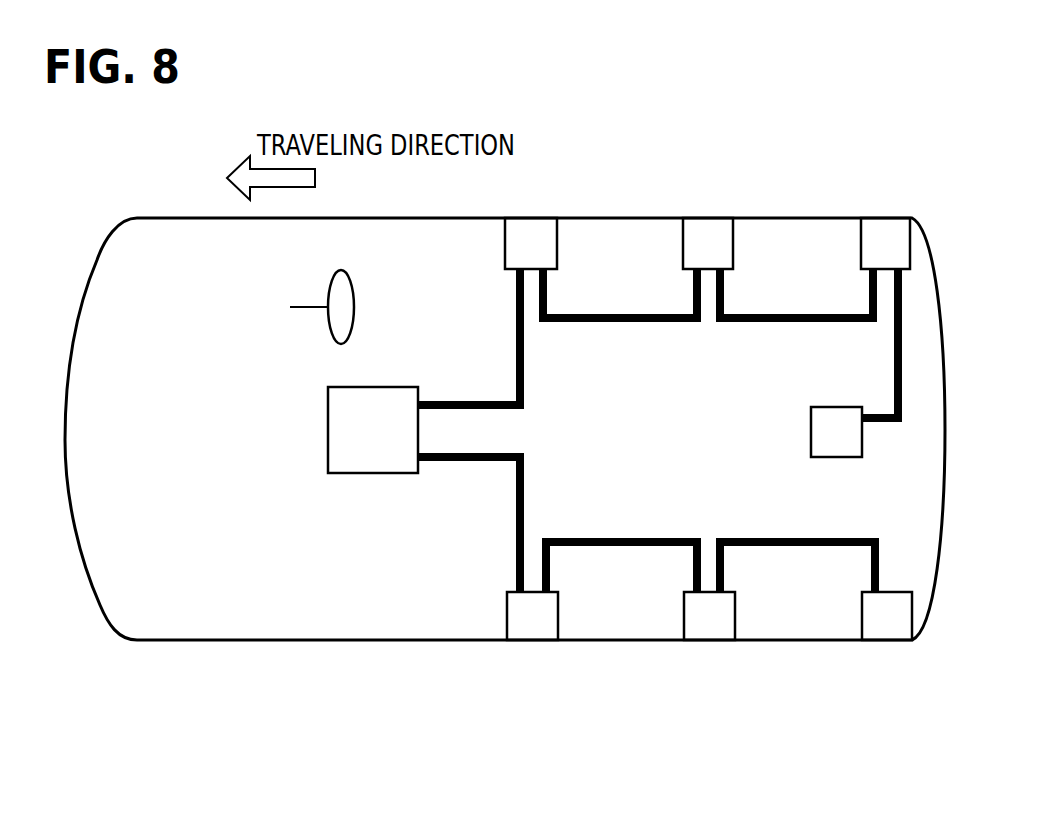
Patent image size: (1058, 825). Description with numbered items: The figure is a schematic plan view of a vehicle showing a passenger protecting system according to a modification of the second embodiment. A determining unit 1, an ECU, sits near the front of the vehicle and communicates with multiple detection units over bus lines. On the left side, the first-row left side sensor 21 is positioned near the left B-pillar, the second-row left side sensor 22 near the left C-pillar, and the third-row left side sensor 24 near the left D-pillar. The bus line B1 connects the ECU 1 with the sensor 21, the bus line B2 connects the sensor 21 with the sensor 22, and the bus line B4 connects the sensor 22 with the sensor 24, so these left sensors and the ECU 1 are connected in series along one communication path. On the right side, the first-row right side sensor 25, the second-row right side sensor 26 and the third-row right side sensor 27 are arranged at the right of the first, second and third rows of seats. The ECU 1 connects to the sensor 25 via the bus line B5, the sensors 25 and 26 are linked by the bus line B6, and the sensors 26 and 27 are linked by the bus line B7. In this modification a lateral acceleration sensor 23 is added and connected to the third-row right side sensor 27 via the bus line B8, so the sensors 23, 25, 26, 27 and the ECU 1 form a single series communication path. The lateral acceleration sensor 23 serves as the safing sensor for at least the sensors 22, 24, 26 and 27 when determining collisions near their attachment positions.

The determining unit 1 is at (353, 395).
The first-row left side sensor 21 is at (533, 628).
The second-row left side sensor 22 is at (712, 628).
The lateral acceleration sensor 23 is at (823, 417).
The third-row left side sensor 24 is at (888, 628).
The first-row right side sensor 25 is at (532, 230).
The second-row right side sensor 26 is at (708, 230).
The third-row right side sensor 27 is at (885, 230).
The bus line B1 is at (518, 547).
The bus line B2 is at (573, 538).
The bus line B4 is at (752, 538).
The bus line B5 is at (517, 310).
The bus line B6 is at (617, 322).
The bus line B7 is at (833, 322).
The bus line B8 is at (873, 425).